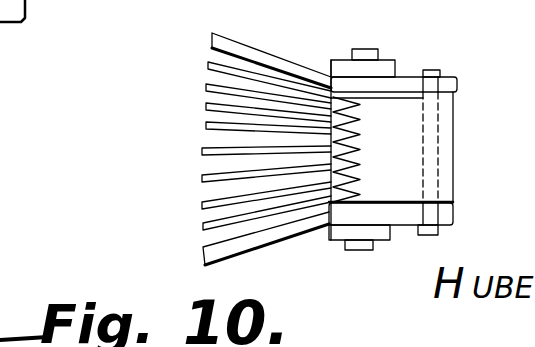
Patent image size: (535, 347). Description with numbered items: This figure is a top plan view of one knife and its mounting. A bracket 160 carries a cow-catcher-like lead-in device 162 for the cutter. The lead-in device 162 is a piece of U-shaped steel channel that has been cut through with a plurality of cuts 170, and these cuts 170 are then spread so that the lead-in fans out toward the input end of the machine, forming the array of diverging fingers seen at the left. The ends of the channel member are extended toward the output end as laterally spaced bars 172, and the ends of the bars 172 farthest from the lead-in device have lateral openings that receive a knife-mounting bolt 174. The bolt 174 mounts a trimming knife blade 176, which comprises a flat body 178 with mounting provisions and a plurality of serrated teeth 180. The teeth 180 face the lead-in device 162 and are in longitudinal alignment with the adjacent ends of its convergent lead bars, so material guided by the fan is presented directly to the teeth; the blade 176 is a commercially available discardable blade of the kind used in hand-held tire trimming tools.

The bracket 160 is at (305, 70).
The cuts 170 is at (215, 52).
The laterally spaced bars 172 is at (207, 87).
The lead-in device 162 is at (200, 108).
The knife-mounting bolt 174 is at (439, 73).
The trimming knife blade 176 is at (455, 157).
The flat body 178 is at (409, 150).
The serrated teeth 180 is at (357, 182).